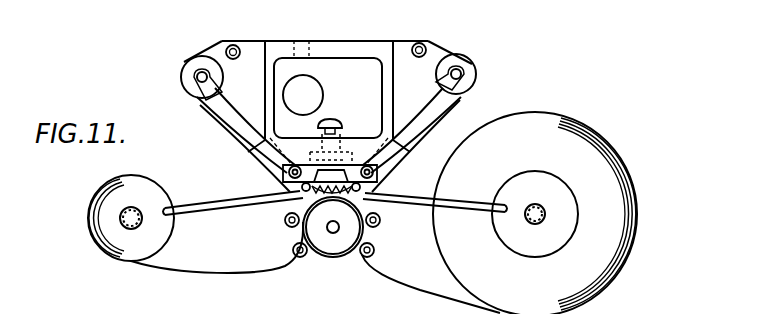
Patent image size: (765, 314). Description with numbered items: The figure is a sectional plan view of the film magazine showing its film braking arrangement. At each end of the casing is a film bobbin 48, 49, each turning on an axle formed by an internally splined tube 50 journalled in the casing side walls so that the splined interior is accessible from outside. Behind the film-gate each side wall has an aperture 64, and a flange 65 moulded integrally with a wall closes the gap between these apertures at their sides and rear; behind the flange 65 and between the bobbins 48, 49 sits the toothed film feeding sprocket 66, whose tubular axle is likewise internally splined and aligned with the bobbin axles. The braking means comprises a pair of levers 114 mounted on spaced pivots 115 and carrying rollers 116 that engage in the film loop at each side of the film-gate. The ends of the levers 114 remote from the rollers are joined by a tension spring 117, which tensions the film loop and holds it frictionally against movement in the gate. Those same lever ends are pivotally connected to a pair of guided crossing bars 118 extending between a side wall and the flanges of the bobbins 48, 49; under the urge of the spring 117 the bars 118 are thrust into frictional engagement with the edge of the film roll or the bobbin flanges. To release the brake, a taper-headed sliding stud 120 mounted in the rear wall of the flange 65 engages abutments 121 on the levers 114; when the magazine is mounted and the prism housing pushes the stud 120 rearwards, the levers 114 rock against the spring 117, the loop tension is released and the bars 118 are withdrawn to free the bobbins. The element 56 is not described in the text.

The film bobbin 48 is at (602, 143).
The film bobbin 49 is at (89, 226).
The internally splined tube 50 is at (548, 203).
The belt 56 is at (200, 105).
The aperture 64 is at (370, 78).
The flange 65 is at (268, 89).
The toothed film feeding sprocket 66 is at (332, 257).
The lever 114 is at (233, 130).
The pivot 115 is at (284, 177).
The roller 116 is at (185, 83).
The tension spring 117 is at (316, 194).
The guided crossing bar 118 is at (236, 199).
The taper-headed sliding stud 120 is at (333, 126).
The abutment 121 is at (333, 142).